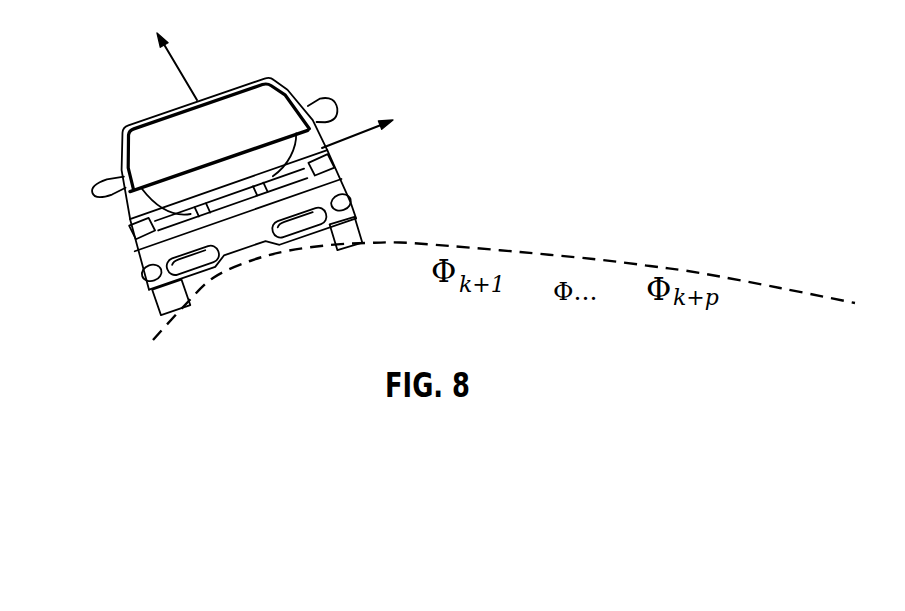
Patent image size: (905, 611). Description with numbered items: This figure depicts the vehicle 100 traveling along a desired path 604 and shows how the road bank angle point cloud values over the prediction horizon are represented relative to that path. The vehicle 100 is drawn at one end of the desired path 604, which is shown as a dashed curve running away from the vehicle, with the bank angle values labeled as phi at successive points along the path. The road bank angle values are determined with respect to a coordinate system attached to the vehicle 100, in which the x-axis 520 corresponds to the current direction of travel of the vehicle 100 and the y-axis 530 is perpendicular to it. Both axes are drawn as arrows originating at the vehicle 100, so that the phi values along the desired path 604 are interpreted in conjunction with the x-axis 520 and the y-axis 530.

The vehicle 100 is at (121, 240).
The x-axis 520 is at (176, 69).
The y-axis 530 is at (363, 134).
The desired path 604 is at (766, 289).